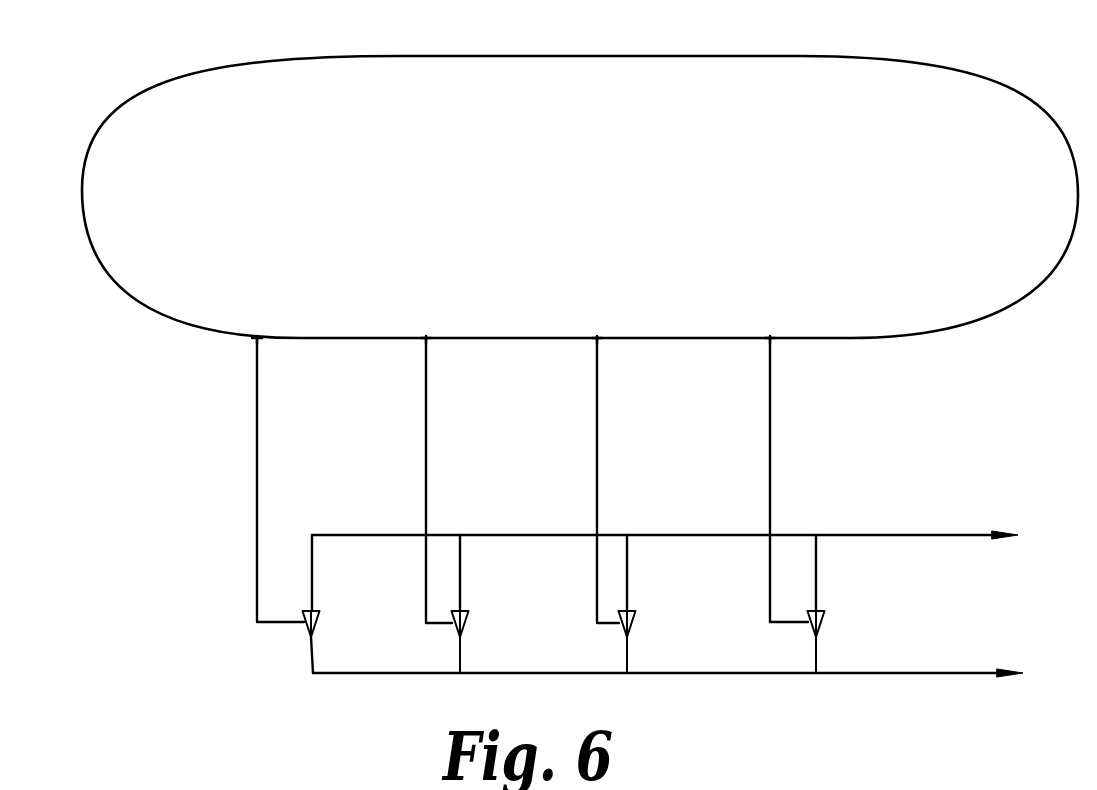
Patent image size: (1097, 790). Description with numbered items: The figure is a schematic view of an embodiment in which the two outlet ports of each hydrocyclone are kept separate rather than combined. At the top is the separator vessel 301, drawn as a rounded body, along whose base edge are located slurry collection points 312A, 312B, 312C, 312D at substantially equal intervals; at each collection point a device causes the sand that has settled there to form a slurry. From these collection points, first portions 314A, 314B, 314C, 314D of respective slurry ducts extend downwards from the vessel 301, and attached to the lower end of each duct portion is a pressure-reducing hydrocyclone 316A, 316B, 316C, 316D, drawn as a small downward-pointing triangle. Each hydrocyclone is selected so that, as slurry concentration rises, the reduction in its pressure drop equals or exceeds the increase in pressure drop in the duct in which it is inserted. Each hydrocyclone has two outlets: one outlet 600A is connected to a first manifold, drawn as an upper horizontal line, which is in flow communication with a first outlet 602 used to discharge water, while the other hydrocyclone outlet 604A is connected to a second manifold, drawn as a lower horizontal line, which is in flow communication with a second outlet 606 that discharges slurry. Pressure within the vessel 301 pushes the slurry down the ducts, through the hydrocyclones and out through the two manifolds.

The vessel 301 is at (968, 70).
The slurry collection point 312A is at (257, 338).
The slurry collection point 312B is at (426, 338).
The slurry collection point 312C is at (597, 338).
The slurry collection point 312D is at (770, 338).
The first portion of slurry duct 314A is at (259, 413).
The first portion of slurry duct 314B is at (428, 413).
The first portion of slurry duct 314C is at (599, 413).
The first portion of slurry duct 314D is at (772, 413).
The pressure-reducing hydrocyclone 316A is at (316, 613).
The pressure-reducing hydrocyclone 316B is at (468, 614).
The pressure-reducing hydrocyclone 316C is at (637, 613).
The pressure-reducing hydrocyclone 316D is at (826, 617).
The hydrocyclone outlet 600A is at (307, 610).
The first outlet 602 is at (862, 535).
The hydrocyclone outlet 604A is at (311, 638).
The second outlet 606 is at (975, 676).